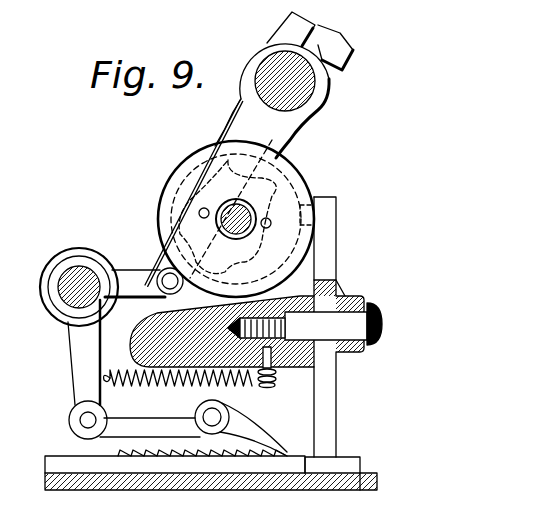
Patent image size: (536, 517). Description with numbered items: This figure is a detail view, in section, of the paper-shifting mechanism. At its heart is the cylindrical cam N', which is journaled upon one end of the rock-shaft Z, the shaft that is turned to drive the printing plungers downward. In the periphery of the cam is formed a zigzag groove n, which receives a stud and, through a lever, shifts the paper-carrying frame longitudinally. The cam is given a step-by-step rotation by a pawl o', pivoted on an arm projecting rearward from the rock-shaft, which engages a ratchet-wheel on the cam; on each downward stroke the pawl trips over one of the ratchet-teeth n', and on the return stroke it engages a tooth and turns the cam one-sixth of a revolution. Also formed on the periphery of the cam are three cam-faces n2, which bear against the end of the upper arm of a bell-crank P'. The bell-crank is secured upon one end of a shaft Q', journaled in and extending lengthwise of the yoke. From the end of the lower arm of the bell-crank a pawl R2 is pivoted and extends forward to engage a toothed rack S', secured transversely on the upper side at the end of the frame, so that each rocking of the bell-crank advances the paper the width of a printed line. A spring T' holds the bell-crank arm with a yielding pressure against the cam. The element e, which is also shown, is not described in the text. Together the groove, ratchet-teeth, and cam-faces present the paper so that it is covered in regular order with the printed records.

The rock-shaft Z is at (262, 48).
The pawl o' is at (186, 209).
The connecting rod e is at (194, 193).
The cam-faces n2 is at (256, 254).
The cylindrical cam N' is at (302, 123).
The ratchet-teeth n' is at (236, 218).
The zigzag groove n is at (211, 343).
The shaft Q' is at (101, 291).
The bell-crank P' is at (74, 369).
The pawl R2 is at (164, 417).
The spring T' is at (201, 374).
The toothed rack S' is at (259, 434).